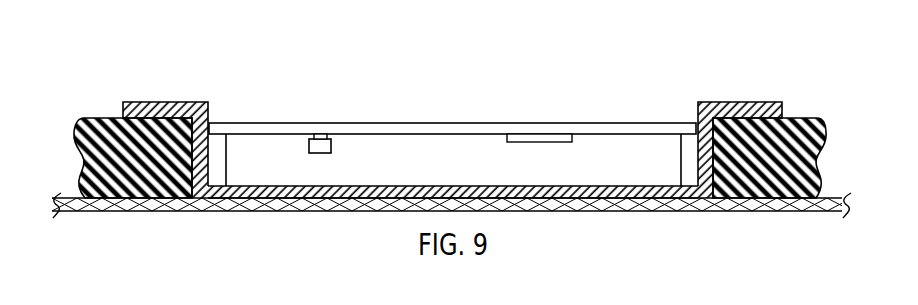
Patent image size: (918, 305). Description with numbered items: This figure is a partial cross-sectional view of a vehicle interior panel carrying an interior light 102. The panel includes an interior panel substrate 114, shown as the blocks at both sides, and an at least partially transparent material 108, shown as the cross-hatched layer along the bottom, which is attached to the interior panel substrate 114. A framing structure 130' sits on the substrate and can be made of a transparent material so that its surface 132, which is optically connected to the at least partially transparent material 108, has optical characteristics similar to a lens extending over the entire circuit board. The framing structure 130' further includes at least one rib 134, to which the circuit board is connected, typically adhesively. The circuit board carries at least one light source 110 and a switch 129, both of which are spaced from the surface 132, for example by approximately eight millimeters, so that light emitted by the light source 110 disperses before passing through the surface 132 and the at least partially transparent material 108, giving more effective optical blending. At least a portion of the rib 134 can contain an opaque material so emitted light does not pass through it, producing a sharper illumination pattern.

The interior light 102 is at (615, 72).
The at least partially transparent material 108 is at (245, 211).
The light source 110 is at (331, 145).
The interior panel substrate 114 is at (80, 167).
The switch 129 is at (517, 143).
The framing structure 130' is at (751, 127).
The surface 132 is at (338, 208).
The rib 134 is at (227, 156).